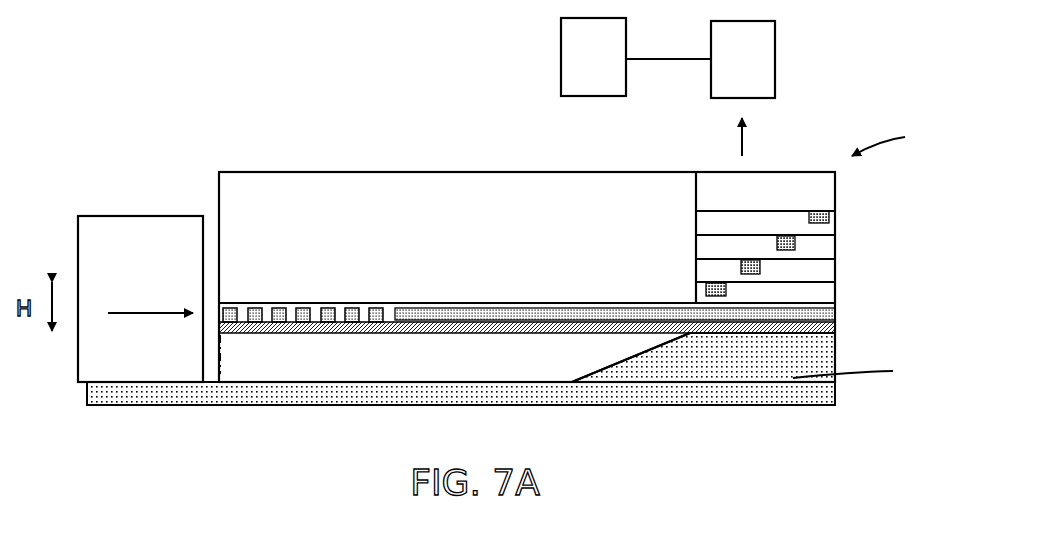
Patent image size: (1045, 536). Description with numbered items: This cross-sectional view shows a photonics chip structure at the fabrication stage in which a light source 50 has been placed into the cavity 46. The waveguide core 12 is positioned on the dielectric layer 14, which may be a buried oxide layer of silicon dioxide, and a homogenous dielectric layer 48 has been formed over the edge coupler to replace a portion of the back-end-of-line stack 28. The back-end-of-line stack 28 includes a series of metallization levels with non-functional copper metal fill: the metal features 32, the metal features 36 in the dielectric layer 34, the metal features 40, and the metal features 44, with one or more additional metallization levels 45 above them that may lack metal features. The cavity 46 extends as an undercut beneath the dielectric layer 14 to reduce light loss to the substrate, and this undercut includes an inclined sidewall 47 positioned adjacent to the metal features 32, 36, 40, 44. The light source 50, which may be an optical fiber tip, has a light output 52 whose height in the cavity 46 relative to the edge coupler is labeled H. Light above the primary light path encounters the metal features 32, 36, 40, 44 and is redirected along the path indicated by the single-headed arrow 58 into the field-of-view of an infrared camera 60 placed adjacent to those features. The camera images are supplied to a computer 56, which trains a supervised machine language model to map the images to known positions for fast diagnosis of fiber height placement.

The waveguide core 12 is at (787, 315).
The dielectric layer 14 is at (780, 329).
The back-end-of-line stack 28 is at (893, 138).
The metal features 32 is at (705, 290).
The dielectric layer 34 is at (800, 272).
The metal features 36 is at (740, 267).
The metal features 40 is at (796, 243).
The metal features 44 is at (808, 219).
The metallization levels 45 is at (798, 196).
The cavity 46 is at (258, 369).
The inclined sidewall 47 is at (628, 360).
The dielectric layer 48 is at (262, 193).
The light source 50 is at (145, 233).
The light output 52 is at (168, 312).
The computer 56 is at (585, 62).
The single-headed arrow 58 is at (742, 143).
The infrared camera 60 is at (748, 62).